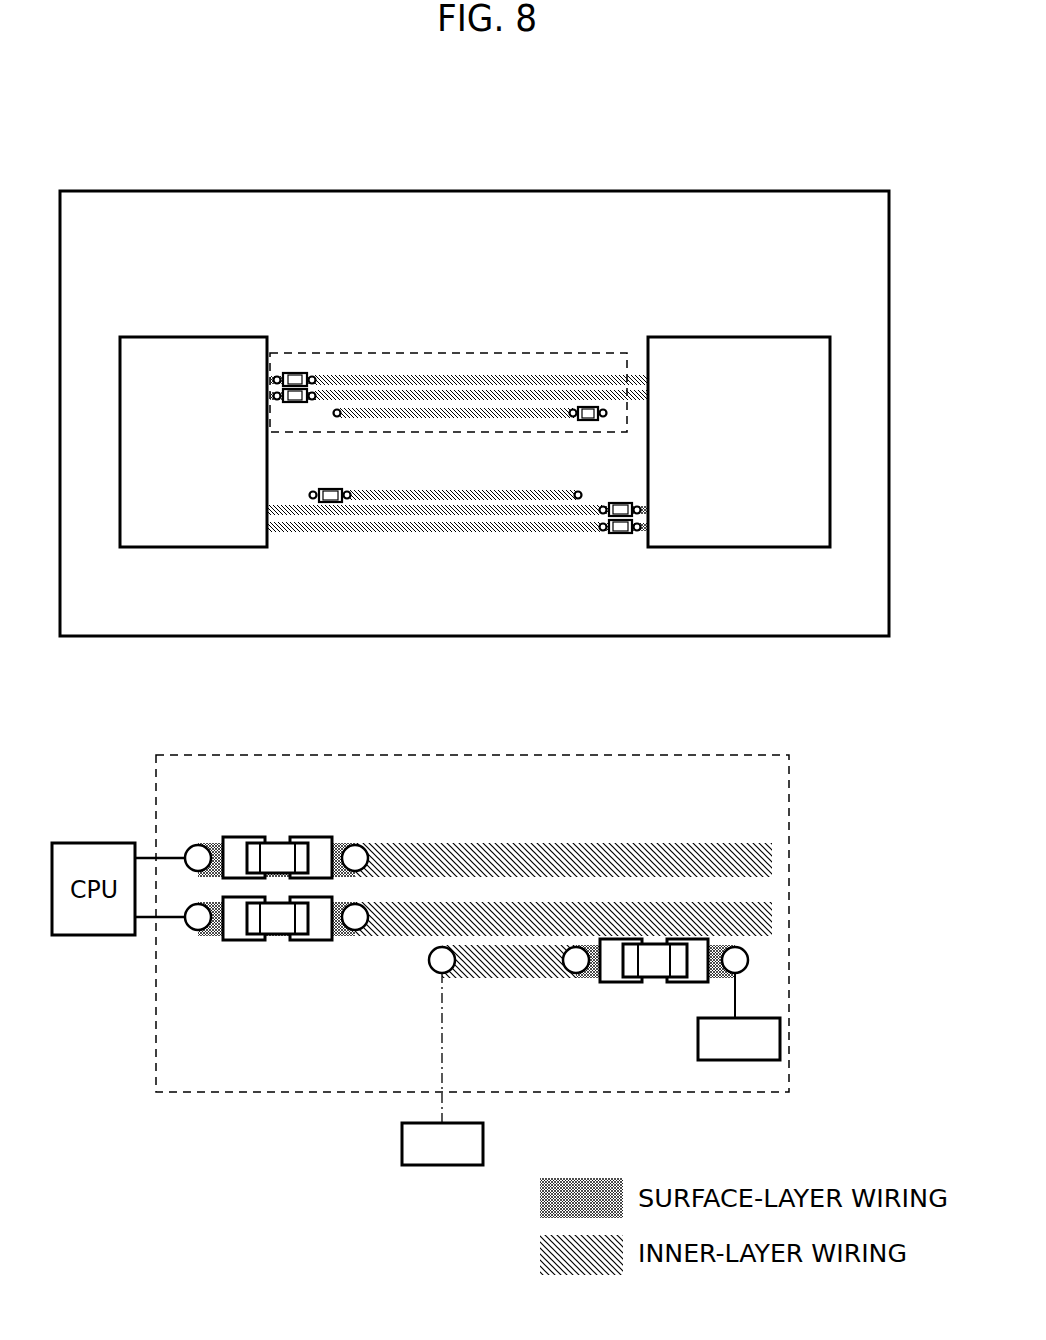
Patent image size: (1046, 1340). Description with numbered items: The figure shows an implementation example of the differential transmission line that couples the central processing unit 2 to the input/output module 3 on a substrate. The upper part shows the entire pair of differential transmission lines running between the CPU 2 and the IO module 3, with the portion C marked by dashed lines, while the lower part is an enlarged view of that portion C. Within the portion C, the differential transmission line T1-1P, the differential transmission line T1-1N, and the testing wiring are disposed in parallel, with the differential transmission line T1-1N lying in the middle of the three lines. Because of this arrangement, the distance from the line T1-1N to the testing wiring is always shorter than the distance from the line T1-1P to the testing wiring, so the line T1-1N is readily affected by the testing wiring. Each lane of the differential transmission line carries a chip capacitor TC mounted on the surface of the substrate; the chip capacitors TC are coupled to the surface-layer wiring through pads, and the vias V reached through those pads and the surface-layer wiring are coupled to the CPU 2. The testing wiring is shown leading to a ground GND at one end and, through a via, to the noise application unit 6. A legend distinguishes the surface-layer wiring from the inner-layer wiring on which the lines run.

The central processing unit (CPU) 2 is at (165, 337).
The input/output (IO) module 3 is at (710, 337).
The portion C is at (440, 353).
The via V is at (203, 843).
The chip capacitor TC is at (280, 837).
The differential transmission line T1-1P is at (772, 862).
The differential transmission line T1-1N is at (772, 920).
The ground GND is at (739, 1016).
The noise application unit 6 is at (442, 1069).